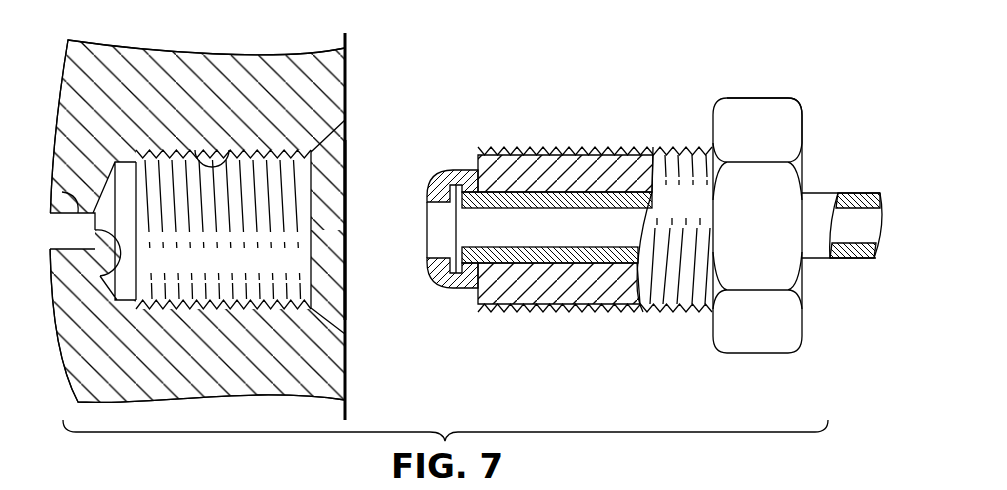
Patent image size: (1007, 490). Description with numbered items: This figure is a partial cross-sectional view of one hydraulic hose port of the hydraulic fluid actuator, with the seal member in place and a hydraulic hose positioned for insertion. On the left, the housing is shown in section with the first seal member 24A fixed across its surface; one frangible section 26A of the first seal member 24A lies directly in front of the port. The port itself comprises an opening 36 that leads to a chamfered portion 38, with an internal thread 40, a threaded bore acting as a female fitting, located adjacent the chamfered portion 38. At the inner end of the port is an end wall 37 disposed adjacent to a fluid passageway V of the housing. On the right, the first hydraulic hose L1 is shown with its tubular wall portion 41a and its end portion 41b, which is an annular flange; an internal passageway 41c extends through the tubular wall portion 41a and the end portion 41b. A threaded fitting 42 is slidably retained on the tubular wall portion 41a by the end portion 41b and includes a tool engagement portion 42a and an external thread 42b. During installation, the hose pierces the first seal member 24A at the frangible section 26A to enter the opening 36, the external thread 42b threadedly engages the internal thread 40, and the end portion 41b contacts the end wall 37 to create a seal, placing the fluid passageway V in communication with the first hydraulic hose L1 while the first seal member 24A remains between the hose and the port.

The first seal member 24A is at (347, 37).
The frangible section 26A is at (347, 183).
The chamfered portion 38 is at (323, 136).
The opening 36 is at (322, 268).
The internal thread 40 is at (190, 153).
The fluid passageway V is at (62, 192).
The end wall 37 is at (95, 230).
The threaded fitting 42 is at (664, 100).
The external thread 42b is at (573, 312).
The end portion 41b is at (442, 170).
The tool engagement portion 42a is at (748, 335).
The first hydraulic hose L1 is at (770, 65).
The tubular wall portion 41a is at (815, 192).
The internal passageway 41c is at (853, 228).